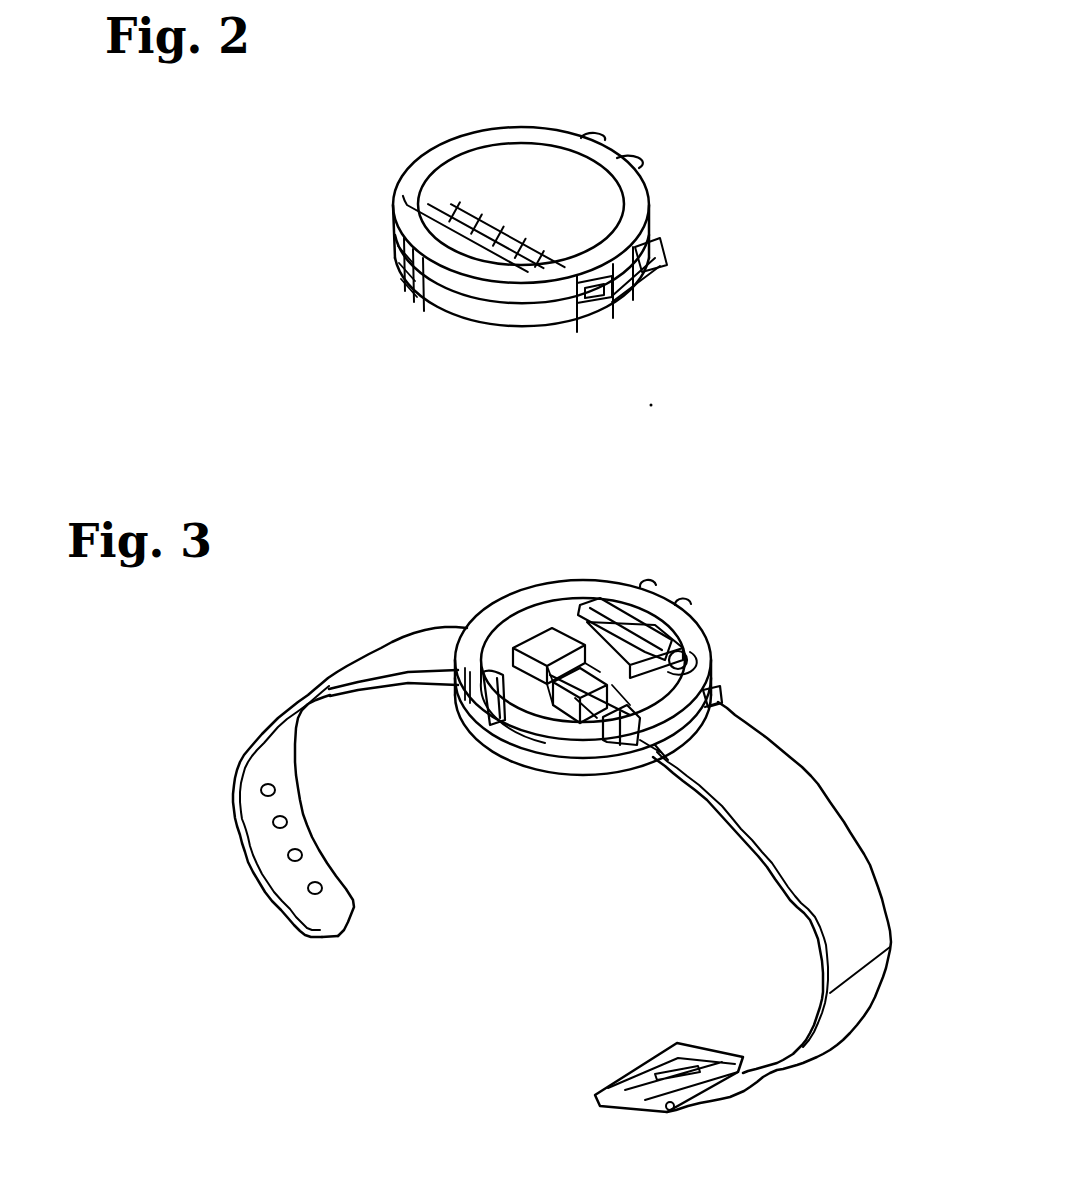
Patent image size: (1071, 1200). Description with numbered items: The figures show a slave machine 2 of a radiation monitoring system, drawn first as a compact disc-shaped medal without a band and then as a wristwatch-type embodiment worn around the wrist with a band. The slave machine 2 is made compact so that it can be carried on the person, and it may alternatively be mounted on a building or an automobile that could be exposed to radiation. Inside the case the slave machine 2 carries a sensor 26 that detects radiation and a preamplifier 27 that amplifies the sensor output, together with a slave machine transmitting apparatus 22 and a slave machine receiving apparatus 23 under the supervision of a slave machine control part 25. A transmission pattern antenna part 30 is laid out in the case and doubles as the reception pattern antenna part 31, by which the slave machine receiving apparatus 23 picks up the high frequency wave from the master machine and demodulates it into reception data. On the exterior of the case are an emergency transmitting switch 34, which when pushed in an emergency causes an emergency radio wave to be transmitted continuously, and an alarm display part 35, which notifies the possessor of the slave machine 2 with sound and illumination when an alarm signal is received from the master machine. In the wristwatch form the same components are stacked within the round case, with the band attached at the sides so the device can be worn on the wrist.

In FIG. 2, the slave machine 2 is at (428, 145).
In FIG. 3, the slave machine 2 is at (467, 607).
In FIG. 3, the slave machine transmitting apparatus 22 is at (715, 708).
In FIG. 3, the slave machine receiving apparatus 23 is at (617, 753).
In FIG. 3, the slave machine control part 25 is at (688, 660).
In FIG. 3, the sensor 26 is at (550, 652).
In FIG. 3, the preamplifier 27 is at (565, 712).
In FIG. 3, the transmission pattern antenna part 30 is at (648, 592).
In FIG. 3, the reception pattern antenna part 31 is at (665, 645).
In FIG. 2, the emergency transmitting switch 34 is at (637, 157).
In FIG. 3, the emergency transmitting switch 34 is at (688, 605).
In FIG. 2, the alarm display part 35 is at (400, 270).
In FIG. 3, the alarm display part 35 is at (480, 733).